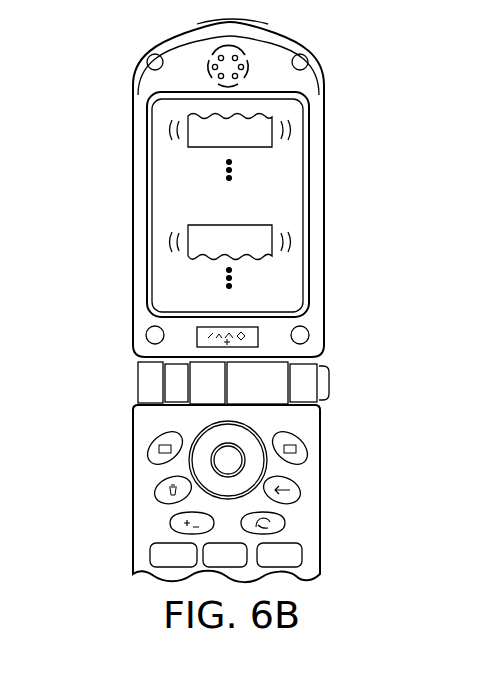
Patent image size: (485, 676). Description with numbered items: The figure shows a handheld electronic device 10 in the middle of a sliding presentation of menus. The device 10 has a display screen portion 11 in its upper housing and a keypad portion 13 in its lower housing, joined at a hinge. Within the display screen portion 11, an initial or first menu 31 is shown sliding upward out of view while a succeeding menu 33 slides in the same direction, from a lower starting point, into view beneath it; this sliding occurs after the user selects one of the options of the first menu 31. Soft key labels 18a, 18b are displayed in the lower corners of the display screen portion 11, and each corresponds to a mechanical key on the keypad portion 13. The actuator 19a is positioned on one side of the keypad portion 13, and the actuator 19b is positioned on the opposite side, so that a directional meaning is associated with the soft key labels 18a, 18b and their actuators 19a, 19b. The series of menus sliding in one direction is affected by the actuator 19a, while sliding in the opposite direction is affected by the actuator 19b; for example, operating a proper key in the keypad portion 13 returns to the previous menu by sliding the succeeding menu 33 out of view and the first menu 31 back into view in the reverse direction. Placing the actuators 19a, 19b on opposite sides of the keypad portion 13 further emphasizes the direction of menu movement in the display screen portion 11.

The handheld electronic device 10 is at (394, 65).
The display screen portion 11 is at (300, 156).
The keypad portion 13 is at (310, 500).
The soft key label 18a is at (151, 298).
The soft key label 18b is at (304, 298).
The actuator 19a is at (138, 448).
The actuator 19b is at (308, 442).
The first menu 31 is at (218, 148).
The succeeding menu 33 is at (228, 226).